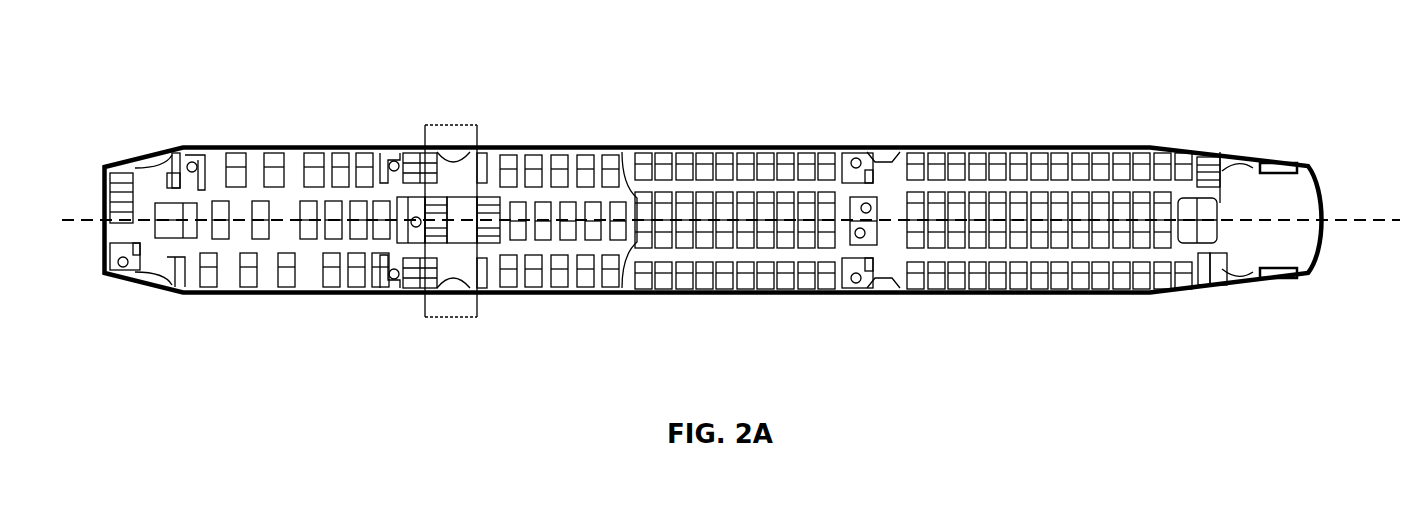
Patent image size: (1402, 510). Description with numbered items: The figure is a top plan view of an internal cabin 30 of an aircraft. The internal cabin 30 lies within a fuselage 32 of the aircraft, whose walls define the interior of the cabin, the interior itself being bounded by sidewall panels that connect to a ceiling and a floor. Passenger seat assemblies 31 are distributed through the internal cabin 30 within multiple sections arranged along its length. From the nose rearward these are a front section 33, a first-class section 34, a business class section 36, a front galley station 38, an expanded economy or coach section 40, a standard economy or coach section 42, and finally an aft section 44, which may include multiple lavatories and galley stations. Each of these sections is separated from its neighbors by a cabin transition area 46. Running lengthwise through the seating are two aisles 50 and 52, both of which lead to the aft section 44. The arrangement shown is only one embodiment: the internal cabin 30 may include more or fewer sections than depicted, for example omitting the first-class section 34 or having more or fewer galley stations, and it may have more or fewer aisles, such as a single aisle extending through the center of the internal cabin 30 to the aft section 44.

The internal cabin 30 is at (241, 52).
The passenger seat assemblies 31 is at (508, 147).
The fuselage 32 is at (575, 108).
The front section 33 is at (160, 306).
The first-class section 34 is at (257, 295).
The business class section 36 is at (330, 148).
The front galley station 38 is at (450, 308).
The expanded economy or coach section 40 is at (550, 295).
The standard economy or coach section 42 is at (681, 147).
The aft section 44 is at (1248, 175).
The cabin transition area 46 is at (178, 147).
The aisle 50 is at (1043, 187).
The aisle 52 is at (1060, 257).